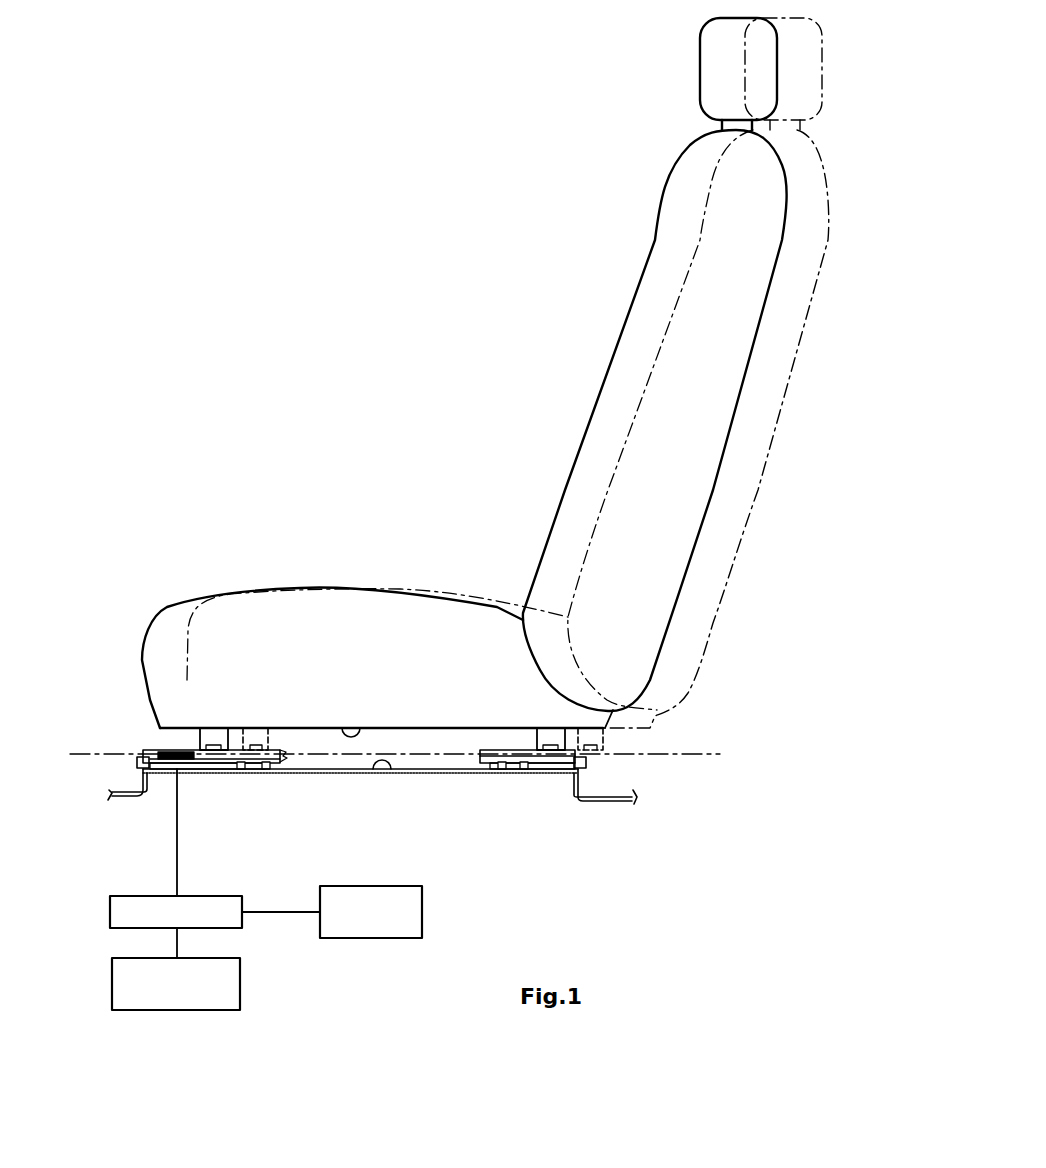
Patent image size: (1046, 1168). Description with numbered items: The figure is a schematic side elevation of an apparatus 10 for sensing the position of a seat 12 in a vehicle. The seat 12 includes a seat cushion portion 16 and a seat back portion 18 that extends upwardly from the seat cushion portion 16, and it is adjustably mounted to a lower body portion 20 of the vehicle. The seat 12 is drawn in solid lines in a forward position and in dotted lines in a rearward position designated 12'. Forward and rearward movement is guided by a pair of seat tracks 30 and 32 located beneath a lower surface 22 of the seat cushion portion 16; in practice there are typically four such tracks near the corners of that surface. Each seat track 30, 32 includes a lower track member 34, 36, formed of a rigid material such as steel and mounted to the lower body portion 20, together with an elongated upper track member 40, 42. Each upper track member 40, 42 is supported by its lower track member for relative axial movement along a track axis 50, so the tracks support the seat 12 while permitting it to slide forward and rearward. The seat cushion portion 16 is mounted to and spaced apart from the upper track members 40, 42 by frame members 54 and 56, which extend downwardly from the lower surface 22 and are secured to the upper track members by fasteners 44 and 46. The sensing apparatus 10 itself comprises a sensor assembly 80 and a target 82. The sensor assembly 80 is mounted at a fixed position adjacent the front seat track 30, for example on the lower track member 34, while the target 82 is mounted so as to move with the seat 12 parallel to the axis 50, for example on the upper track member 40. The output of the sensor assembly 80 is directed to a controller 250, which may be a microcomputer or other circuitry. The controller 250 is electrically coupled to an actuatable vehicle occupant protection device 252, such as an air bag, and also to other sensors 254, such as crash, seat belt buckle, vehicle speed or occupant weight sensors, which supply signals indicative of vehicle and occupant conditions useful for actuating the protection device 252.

The apparatus 10 is at (123, 770).
The seat 12 is at (588, 176).
The seat in rearward position 12' is at (716, 373).
The seat cushion portion 16 is at (365, 620).
The seat back portion 18 is at (648, 331).
The lower body portion 20 is at (382, 773).
The lower surface 22 is at (352, 727).
The seat track 30 is at (395, 780).
The seat track 32 is at (517, 781).
The lower track member 34 is at (253, 762).
The lower track member 36 is at (578, 768).
The upper track member 40 is at (217, 762).
The upper track member 42 is at (488, 752).
The fastener 44 is at (214, 749).
The fastener 46 is at (549, 750).
The track axis 50 is at (658, 758).
The frame member 54 is at (200, 750).
The frame member 56 is at (565, 750).
The sensor assembly 80 is at (160, 772).
The target 82 is at (159, 753).
The controller 250 is at (243, 925).
The actuatable vehicle occupant protection device 252 is at (235, 990).
The other sensors 254 is at (415, 902).